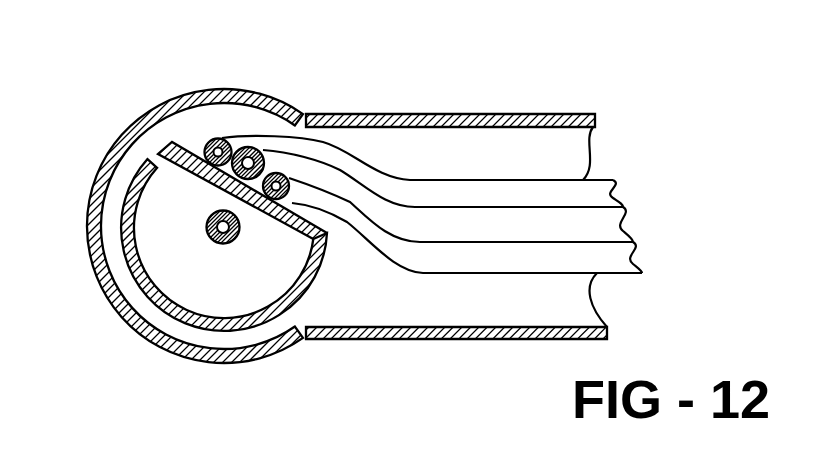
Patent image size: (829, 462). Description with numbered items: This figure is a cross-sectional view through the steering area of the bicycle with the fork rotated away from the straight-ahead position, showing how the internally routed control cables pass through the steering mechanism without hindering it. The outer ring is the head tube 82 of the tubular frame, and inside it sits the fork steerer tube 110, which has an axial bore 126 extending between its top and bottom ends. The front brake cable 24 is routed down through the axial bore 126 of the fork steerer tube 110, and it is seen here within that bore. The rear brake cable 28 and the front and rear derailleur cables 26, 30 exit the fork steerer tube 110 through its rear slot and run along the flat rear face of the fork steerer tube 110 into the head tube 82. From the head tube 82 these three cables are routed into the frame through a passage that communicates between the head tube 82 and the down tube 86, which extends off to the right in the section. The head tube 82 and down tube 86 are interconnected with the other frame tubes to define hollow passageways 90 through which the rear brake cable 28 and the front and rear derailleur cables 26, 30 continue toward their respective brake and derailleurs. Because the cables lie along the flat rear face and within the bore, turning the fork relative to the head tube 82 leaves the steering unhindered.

The head tube 82 is at (96, 188).
The fork steerer tube 110 is at (206, 333).
The axial bore 126 is at (144, 190).
The hollow passageways 90 is at (404, 138).
The down tube 86 is at (557, 114).
The rear derailleur cable 30 is at (436, 194).
The rear brake cable 28 is at (507, 227).
The front derailleur cable 26 is at (493, 258).
The front brake cable 24 is at (210, 238).